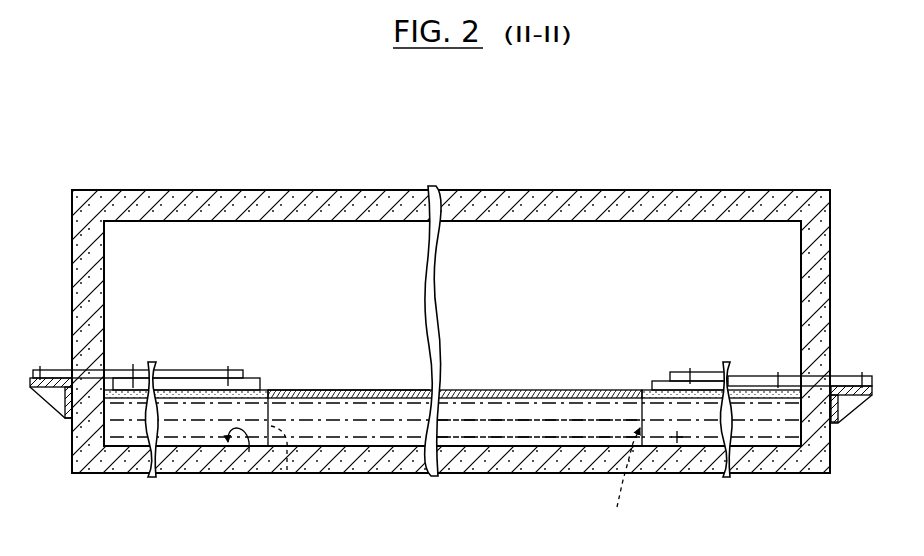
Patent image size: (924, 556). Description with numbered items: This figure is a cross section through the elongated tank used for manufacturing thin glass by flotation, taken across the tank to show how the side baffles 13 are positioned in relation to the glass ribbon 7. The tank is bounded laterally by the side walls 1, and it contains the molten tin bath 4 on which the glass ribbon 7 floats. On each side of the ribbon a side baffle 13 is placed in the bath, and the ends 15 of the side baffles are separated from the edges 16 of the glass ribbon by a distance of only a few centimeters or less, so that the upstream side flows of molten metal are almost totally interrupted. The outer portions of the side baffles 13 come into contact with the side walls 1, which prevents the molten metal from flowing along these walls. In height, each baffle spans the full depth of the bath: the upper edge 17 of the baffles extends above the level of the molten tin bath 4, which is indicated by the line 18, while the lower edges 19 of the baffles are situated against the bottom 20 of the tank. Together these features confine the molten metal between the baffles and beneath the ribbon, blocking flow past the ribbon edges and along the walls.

The side walls 1 is at (80, 292).
The molten tin bath 4 is at (553, 430).
The glass ribbon 7 is at (577, 391).
The side baffles 13 is at (217, 424).
The ends of the side baffles 15 is at (285, 480).
The edges of the glass ribbon 16 is at (272, 392).
The upper edge of the baffles 17 is at (172, 392).
The level of the bath 18 is at (323, 391).
The lower edges of the baffles 19 is at (248, 452).
The bottom of the tank 20 is at (468, 445).